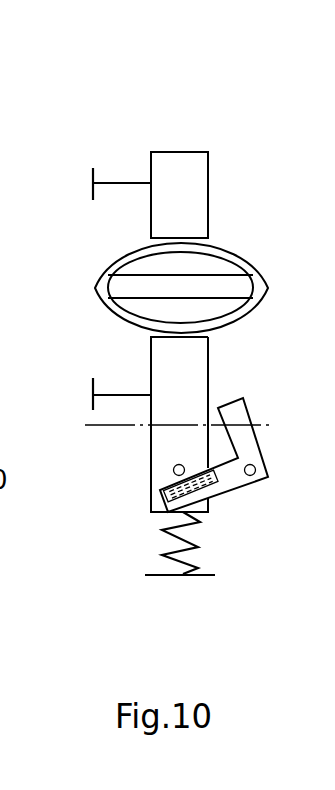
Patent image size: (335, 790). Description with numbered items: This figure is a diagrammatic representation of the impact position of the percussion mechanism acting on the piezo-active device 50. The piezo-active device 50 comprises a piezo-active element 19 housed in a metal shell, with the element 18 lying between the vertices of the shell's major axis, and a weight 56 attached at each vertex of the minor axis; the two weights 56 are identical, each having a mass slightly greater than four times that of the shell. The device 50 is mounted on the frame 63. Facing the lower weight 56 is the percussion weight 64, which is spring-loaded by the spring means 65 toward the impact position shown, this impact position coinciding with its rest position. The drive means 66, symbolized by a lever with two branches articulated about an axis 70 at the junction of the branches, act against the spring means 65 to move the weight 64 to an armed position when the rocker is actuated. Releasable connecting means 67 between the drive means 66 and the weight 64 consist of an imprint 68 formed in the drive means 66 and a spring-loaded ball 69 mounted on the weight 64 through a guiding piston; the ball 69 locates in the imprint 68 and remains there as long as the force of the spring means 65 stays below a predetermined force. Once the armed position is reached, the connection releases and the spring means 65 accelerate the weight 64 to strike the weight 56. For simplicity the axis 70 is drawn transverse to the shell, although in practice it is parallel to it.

The piezo-active device 50 is at (178, 131).
The piezo-active element 19 is at (187, 143).
The weight 56 is at (187, 280).
The element 18 is at (118, 286).
The percussion weight 64 is at (163, 441).
The drive means 66 is at (242, 412).
The releasable connecting means 67 is at (203, 452).
The axis 70 is at (262, 463).
The spring-loaded ball 69 is at (174, 472).
The imprint 68 is at (216, 500).
The spring means 65 is at (198, 547).
The frame 63 is at (207, 577).